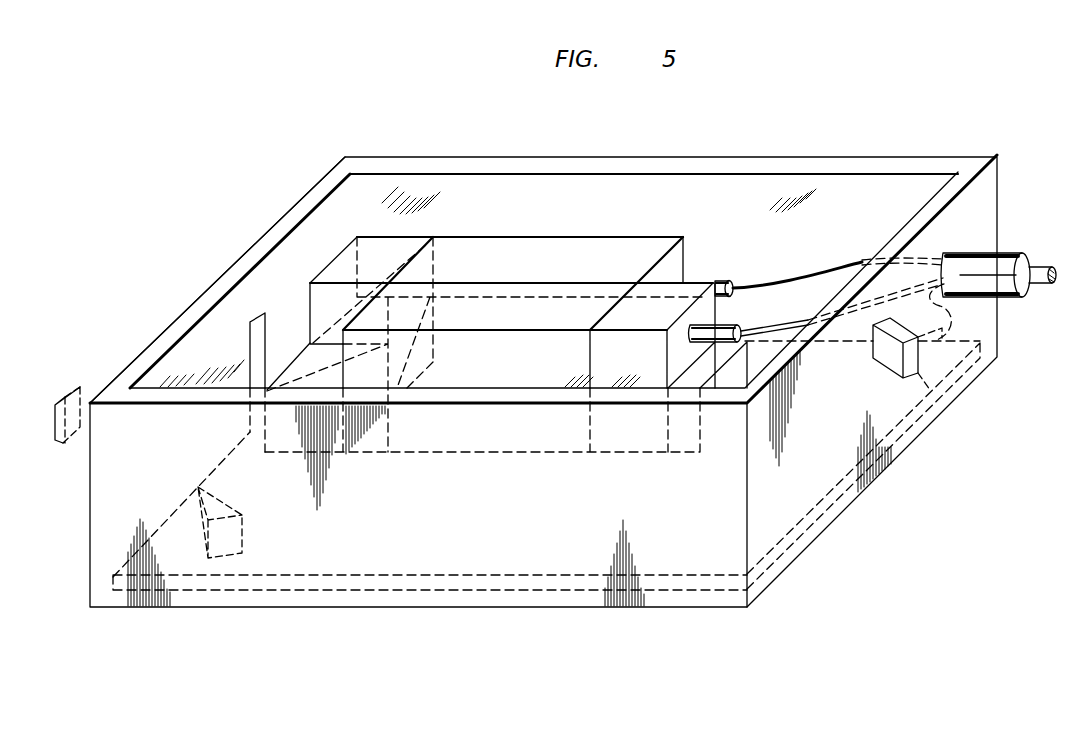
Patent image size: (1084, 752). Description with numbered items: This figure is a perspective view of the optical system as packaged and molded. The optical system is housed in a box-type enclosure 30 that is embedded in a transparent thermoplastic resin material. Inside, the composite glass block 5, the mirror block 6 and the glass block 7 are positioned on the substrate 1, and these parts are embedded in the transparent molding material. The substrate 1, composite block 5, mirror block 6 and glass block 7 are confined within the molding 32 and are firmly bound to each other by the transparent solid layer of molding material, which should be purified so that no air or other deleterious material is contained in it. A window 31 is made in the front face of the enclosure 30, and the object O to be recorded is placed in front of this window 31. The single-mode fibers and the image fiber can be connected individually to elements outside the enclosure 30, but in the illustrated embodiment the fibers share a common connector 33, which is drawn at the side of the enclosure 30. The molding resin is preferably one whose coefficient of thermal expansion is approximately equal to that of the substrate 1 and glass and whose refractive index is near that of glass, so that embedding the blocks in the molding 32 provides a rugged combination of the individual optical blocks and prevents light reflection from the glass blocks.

The substrate 1 is at (420, 575).
The composite glass block 5 is at (495, 243).
The mirror block 6 is at (223, 547).
The glass block 7 is at (943, 390).
The box-type enclosure 30 is at (820, 478).
The window 31 is at (238, 367).
The molding 32 is at (710, 183).
The common connector 33 is at (1005, 285).
The object O is at (62, 396).